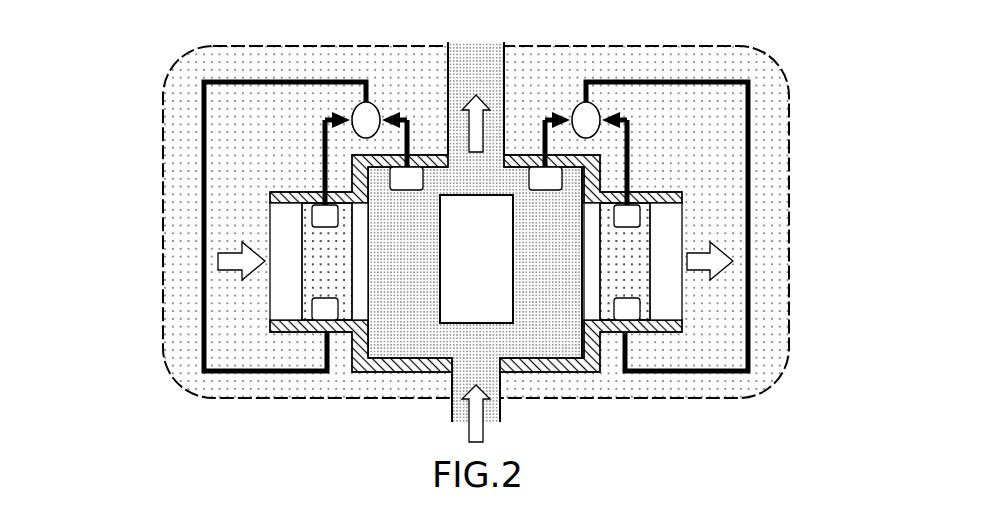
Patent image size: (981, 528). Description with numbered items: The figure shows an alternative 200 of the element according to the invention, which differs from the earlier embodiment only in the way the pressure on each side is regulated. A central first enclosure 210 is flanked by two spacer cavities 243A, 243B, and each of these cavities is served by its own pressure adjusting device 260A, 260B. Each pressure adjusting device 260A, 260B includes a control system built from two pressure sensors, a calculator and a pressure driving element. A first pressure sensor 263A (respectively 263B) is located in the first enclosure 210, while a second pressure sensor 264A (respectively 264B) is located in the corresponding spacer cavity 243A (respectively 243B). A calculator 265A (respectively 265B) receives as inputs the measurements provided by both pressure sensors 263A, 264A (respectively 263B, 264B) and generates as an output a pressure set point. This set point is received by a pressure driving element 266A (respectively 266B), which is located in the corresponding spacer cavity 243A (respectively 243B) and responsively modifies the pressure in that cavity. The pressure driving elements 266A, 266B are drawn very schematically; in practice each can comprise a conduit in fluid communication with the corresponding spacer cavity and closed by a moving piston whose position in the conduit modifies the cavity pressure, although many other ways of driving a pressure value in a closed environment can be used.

The alternative of the element 200 is at (132, 83).
The first enclosure 210 is at (405, 358).
The spacer cavity 243A is at (340, 283).
The spacer cavity 243B is at (610, 283).
The pressure adjusting device 260A is at (83, 153).
The pressure adjusting device 260B is at (867, 152).
The pressure sensor 263A is at (398, 173).
The pressure sensor 263B is at (553, 173).
The pressure sensor 264A is at (320, 215).
The pressure sensor 264B is at (632, 215).
The calculator 265A is at (363, 127).
The calculator 265B is at (589, 127).
The pressure driving element 266A is at (317, 313).
The pressure driving element 266B is at (632, 312).